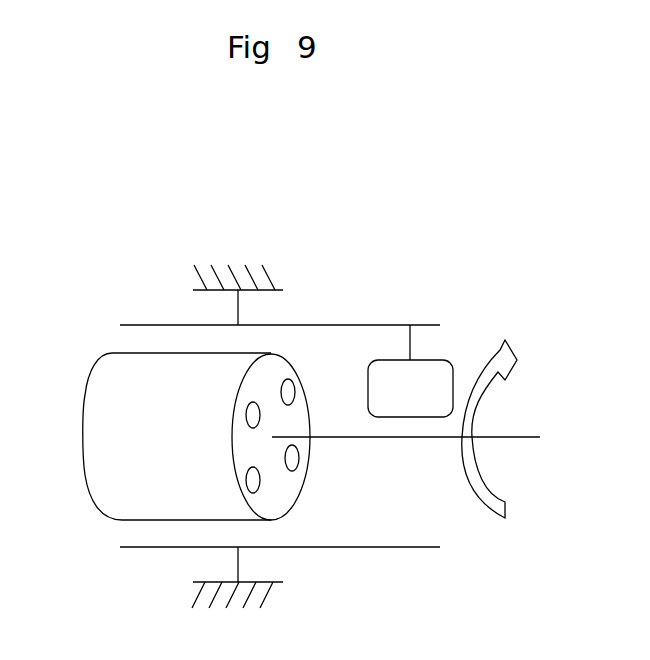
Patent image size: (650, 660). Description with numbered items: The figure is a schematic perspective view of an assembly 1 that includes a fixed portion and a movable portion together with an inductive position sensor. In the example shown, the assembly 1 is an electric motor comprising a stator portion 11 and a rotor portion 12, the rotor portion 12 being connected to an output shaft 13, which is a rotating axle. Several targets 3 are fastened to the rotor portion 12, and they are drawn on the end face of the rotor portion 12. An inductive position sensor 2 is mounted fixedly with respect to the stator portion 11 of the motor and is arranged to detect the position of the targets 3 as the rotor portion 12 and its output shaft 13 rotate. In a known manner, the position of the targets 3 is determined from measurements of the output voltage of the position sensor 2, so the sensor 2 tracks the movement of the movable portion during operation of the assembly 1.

The assembly 1 is at (63, 316).
The inductive position sensor 2 is at (419, 401).
The targets 3 is at (292, 458).
The stator portion 11 is at (362, 325).
The rotor portion 12 is at (94, 497).
The output shaft 13 is at (425, 437).